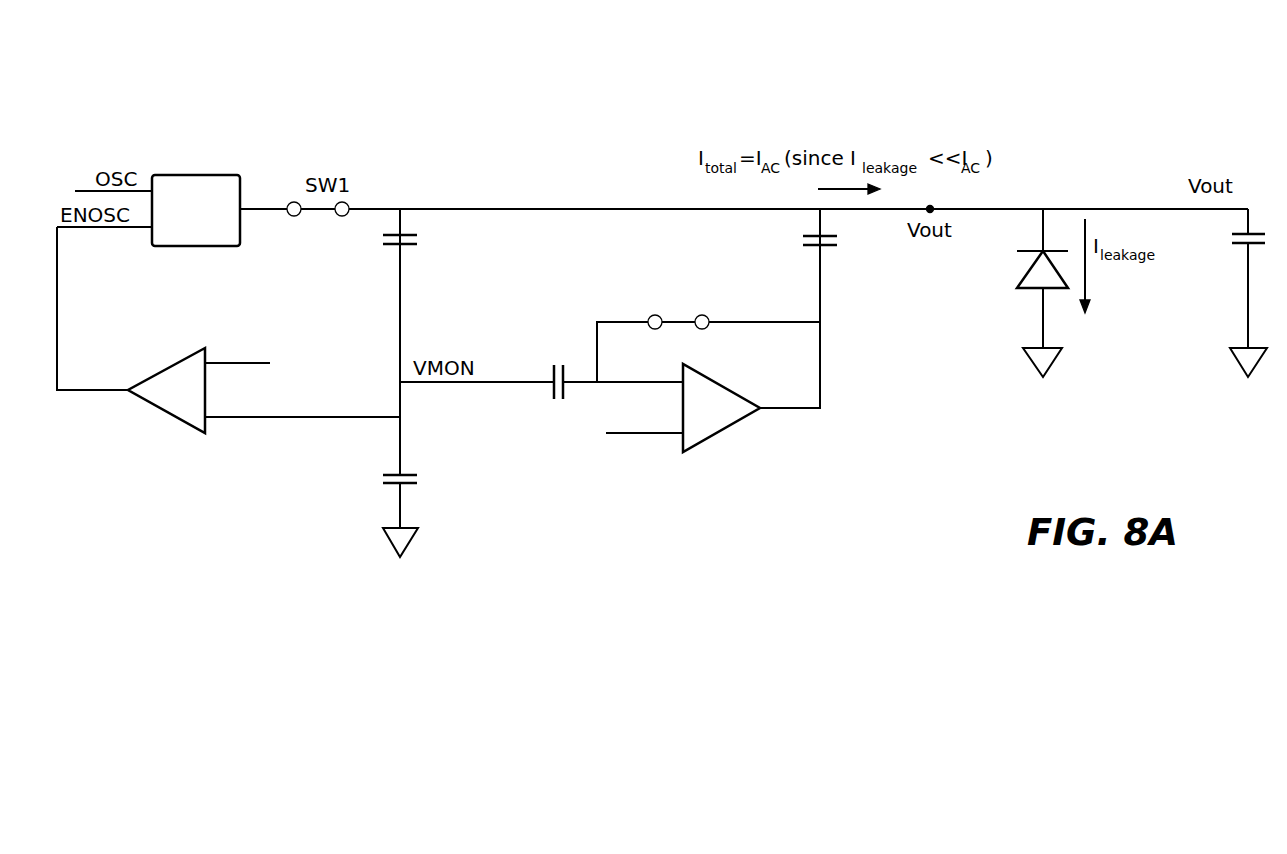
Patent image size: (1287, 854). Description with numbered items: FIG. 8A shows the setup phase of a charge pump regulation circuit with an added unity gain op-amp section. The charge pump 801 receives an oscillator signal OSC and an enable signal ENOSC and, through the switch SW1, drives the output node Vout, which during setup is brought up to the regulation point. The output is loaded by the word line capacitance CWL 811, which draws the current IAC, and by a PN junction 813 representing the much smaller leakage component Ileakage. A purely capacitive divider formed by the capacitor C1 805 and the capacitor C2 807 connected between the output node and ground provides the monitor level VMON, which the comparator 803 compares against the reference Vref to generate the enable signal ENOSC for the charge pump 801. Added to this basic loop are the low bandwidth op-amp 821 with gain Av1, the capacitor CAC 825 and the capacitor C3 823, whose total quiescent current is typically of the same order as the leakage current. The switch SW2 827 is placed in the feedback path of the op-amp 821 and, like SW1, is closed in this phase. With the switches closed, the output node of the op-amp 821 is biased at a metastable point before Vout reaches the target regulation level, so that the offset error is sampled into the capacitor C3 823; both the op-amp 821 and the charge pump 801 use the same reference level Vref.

The charge pump 801 is at (220, 175).
The comparator 803 is at (148, 405).
The capacitor C1 805 is at (407, 248).
The capacitor C2 807 is at (405, 487).
The word line capacitance CWL 811 is at (1237, 250).
The PN junction 813 is at (1020, 300).
The op-amp 821 is at (735, 428).
The capacitor C3 823 is at (552, 390).
The capacitor CAC 825 is at (815, 250).
The switch SW2 827 is at (667, 315).